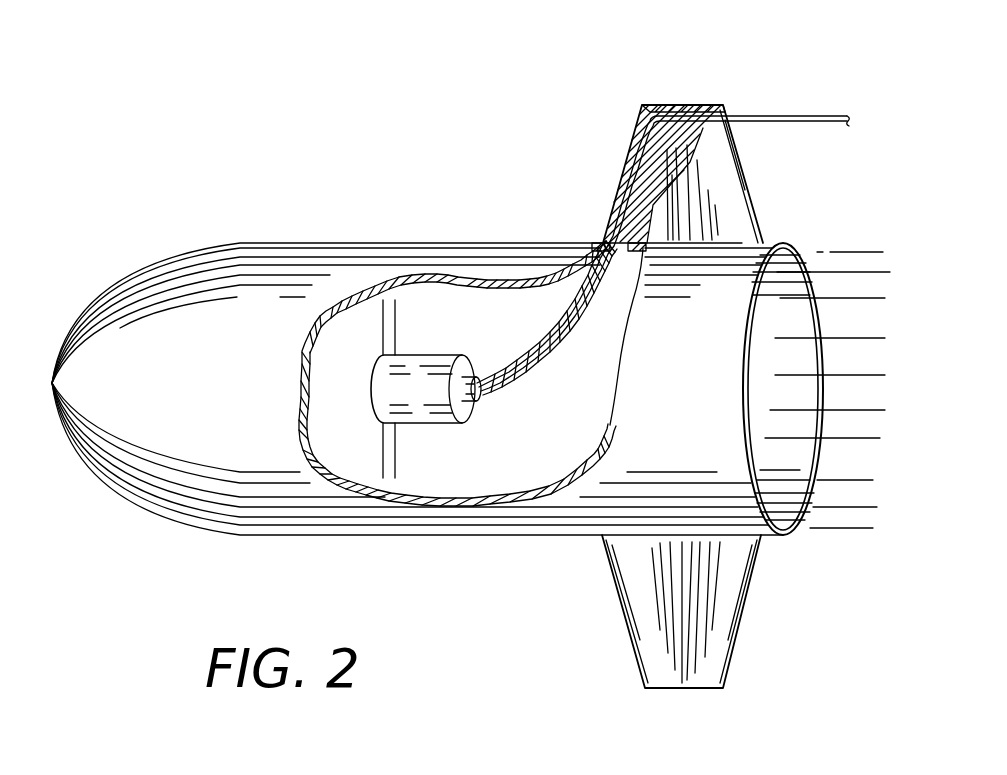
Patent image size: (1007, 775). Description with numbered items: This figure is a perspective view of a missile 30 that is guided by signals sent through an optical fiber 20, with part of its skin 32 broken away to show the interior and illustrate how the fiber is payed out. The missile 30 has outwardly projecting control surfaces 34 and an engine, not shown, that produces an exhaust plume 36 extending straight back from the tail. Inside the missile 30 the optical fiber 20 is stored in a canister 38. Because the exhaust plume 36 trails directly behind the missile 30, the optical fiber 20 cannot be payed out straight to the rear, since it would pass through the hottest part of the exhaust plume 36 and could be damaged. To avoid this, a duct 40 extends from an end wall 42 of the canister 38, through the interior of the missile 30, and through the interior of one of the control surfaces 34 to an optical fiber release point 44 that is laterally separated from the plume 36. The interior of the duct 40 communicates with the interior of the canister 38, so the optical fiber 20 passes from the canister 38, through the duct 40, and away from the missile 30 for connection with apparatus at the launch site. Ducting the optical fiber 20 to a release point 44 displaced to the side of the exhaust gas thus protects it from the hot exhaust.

The optical fiber 20 is at (537, 334).
The missile 30 is at (242, 212).
The skin 32 is at (385, 527).
The control surfaces 34 is at (706, 153).
The exhaust plume 36 is at (833, 470).
The canister 38 is at (437, 353).
The duct 40 is at (525, 387).
The end wall 42 is at (470, 408).
The optical fiber release point 44 is at (715, 105).